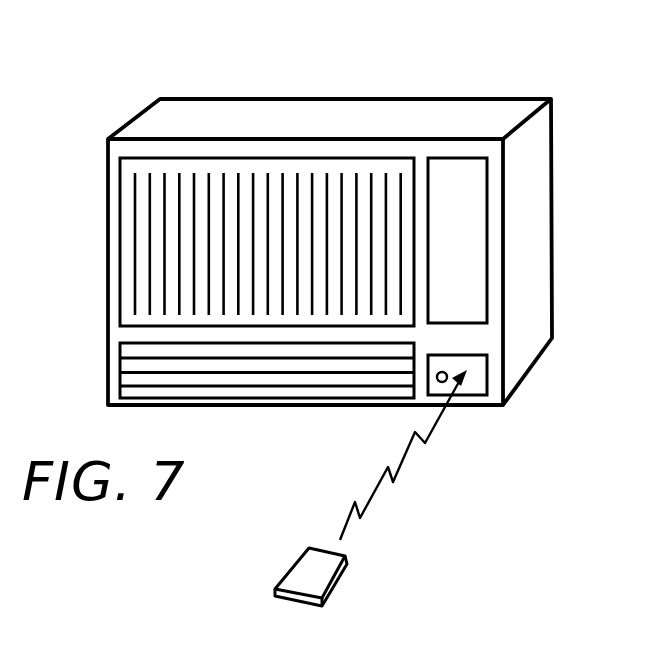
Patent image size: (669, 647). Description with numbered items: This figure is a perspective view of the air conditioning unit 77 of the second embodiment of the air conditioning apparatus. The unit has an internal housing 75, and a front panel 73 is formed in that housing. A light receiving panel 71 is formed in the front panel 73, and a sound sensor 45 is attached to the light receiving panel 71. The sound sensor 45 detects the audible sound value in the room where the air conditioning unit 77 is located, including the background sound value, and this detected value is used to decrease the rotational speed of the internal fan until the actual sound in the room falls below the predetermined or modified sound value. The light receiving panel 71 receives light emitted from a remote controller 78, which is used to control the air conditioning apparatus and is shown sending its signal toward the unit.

The air conditioning unit 77 is at (333, 92).
The internal housing 75 is at (225, 118).
The front panel 73 is at (475, 227).
The light receiving panel 71 is at (487, 365).
The sound sensor 45 is at (435, 388).
The remote controller 78 is at (347, 567).